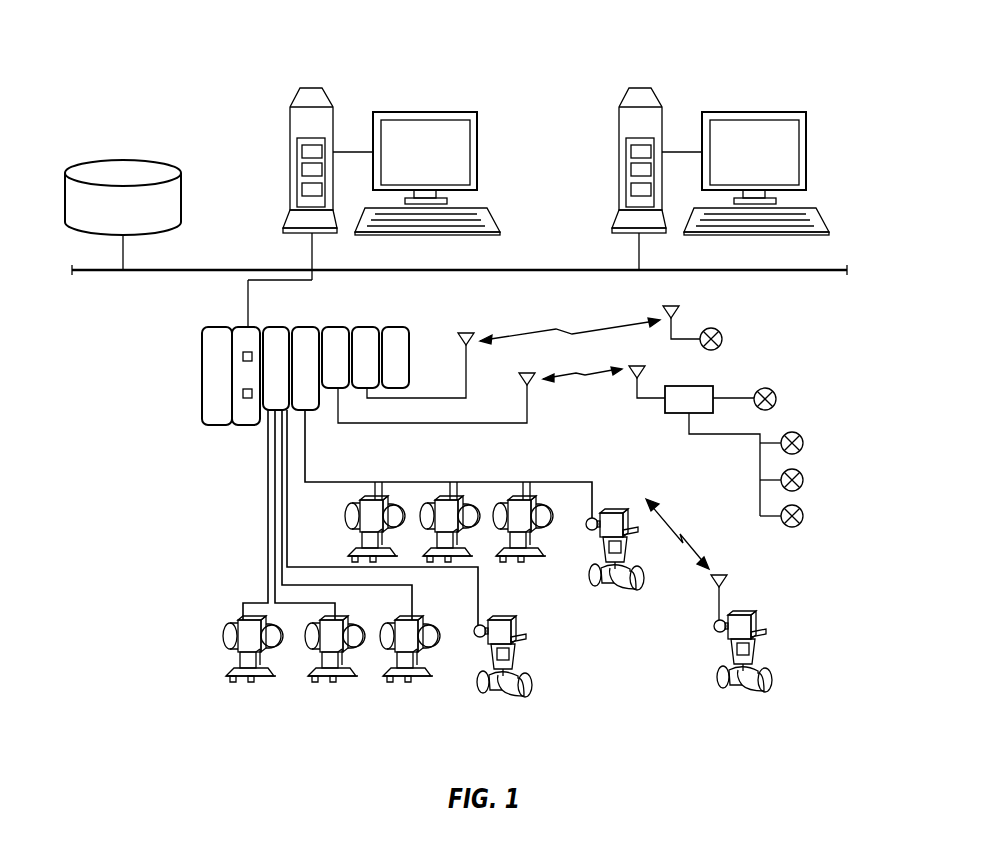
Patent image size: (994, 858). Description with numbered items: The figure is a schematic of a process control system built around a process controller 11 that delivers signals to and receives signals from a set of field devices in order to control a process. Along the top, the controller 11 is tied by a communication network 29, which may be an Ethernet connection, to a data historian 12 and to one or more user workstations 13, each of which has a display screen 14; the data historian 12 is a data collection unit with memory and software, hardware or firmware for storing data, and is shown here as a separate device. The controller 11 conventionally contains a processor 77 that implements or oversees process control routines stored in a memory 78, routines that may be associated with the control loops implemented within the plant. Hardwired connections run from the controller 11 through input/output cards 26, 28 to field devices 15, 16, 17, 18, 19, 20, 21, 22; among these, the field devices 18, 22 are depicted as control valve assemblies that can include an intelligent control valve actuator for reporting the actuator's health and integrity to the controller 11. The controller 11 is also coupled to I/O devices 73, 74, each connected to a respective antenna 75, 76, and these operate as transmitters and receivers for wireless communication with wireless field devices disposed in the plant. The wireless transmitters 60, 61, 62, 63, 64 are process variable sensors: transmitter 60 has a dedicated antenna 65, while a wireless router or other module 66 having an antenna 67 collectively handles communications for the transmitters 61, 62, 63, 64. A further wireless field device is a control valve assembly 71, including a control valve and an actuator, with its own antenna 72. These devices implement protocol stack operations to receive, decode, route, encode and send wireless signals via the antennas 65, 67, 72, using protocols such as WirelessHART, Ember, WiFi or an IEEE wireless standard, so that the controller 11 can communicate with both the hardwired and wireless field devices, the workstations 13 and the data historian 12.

The process controller 11 is at (284, 352).
The data historian 12 is at (185, 200).
The user workstation 13 is at (290, 118).
The display screen 14 is at (478, 158).
The field device 15 is at (232, 650).
The field device 16 is at (318, 650).
The field device 17 is at (394, 652).
The field device 18 is at (490, 655).
The field device 19 is at (379, 497).
The field device 20 is at (455, 497).
The field device 21 is at (521, 497).
The field device 22 is at (614, 511).
The input/output card 26 is at (276, 339).
The input/output card 28 is at (305, 339).
The communication network 29 is at (177, 278).
The wireless field device 60 is at (721, 333).
The wireless field device 61 is at (775, 393).
The wireless field device 62 is at (802, 437).
The wireless field device 63 is at (802, 474).
The wireless field device 64 is at (802, 510).
The antenna 65 is at (678, 318).
The wireless router or module 66 is at (675, 416).
The antenna 67 is at (645, 378).
The control valve assembly 71 is at (757, 650).
The antenna 72 is at (729, 583).
The I/O device 73 is at (337, 339).
The I/O device 74 is at (366, 339).
The antenna 75 is at (530, 413).
The antenna 76 is at (468, 372).
The processor 77 is at (243, 355).
The memory 78 is at (243, 393).